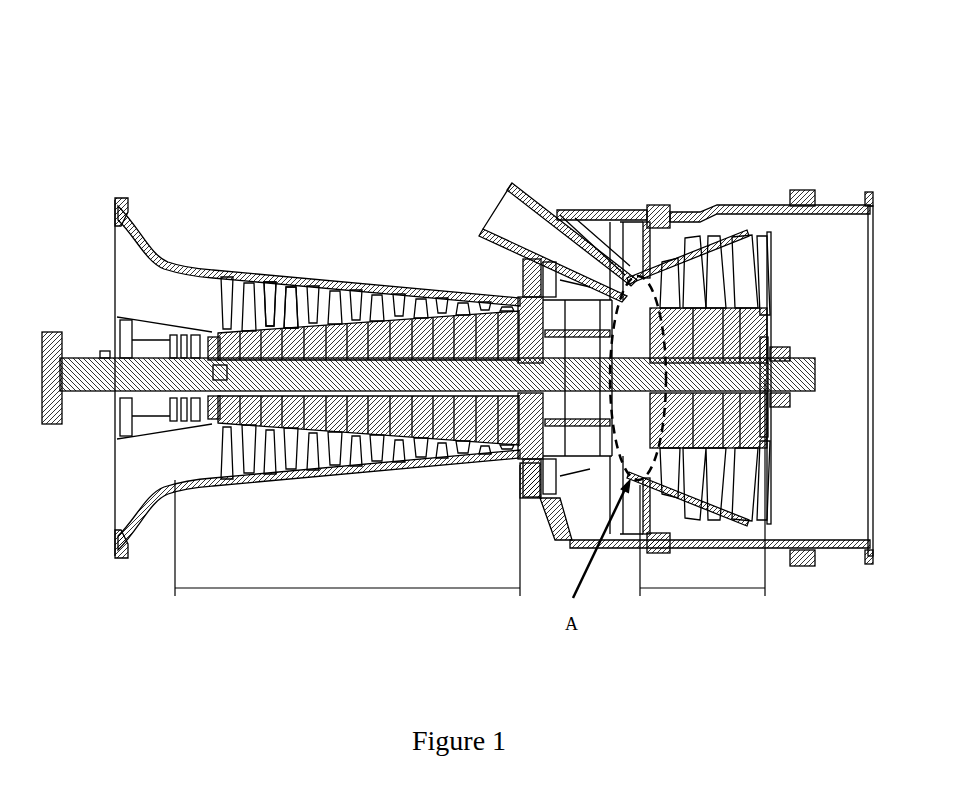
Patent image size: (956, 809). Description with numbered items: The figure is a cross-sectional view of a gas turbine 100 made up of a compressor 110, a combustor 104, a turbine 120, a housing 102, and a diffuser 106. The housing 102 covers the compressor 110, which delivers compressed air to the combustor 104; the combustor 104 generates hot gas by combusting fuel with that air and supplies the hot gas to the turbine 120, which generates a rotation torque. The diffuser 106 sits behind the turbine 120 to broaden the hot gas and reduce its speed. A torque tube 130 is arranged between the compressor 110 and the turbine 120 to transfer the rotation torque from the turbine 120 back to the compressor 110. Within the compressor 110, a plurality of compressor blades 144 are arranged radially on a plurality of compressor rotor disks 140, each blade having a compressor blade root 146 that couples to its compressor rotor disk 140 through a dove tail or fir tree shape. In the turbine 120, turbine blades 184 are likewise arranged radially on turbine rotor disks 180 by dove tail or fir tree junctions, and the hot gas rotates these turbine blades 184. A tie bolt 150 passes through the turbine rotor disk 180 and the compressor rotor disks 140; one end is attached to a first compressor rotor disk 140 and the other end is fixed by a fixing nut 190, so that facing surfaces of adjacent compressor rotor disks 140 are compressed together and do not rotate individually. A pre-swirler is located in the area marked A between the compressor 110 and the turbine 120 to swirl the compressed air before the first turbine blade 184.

The gas turbine 100 is at (830, 41).
The housing 102 is at (362, 258).
The combustor 104 is at (516, 170).
The diffuser 106 is at (836, 182).
The compressor 110 is at (347, 530).
The turbine 120 is at (702, 488).
The torque tube 130 is at (503, 283).
The compressor rotor disk 140 is at (263, 308).
The compressor blade 144 is at (266, 327).
The compressor blade root 146 is at (284, 300).
The tie bolt 150 is at (172, 418).
The turbine rotor disk 180 is at (762, 293).
The turbine blade 184 is at (746, 207).
The fixing nut 190 is at (790, 356).